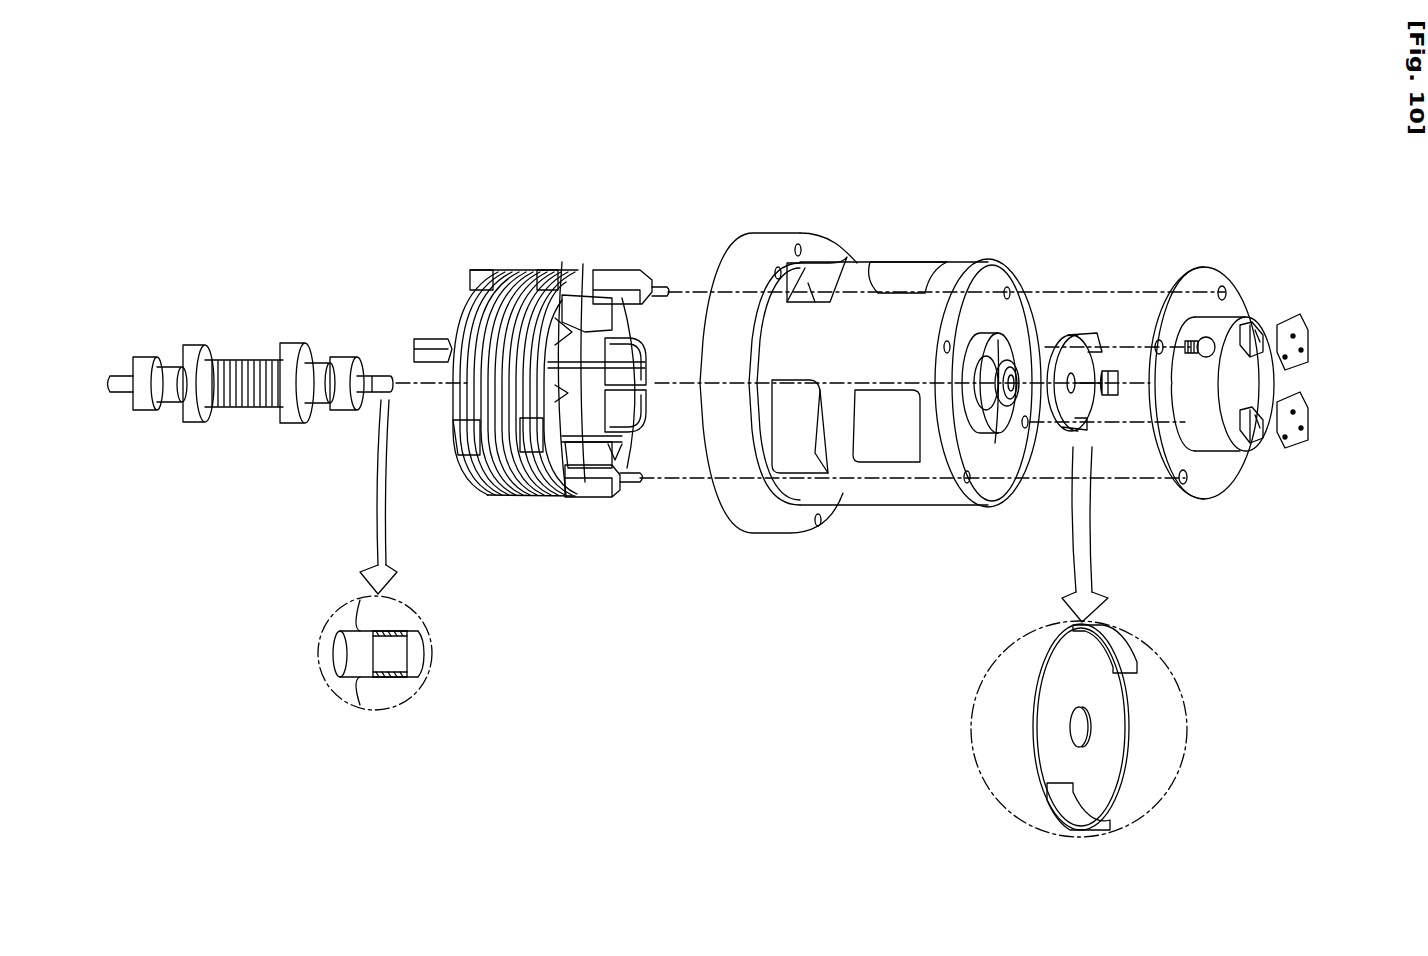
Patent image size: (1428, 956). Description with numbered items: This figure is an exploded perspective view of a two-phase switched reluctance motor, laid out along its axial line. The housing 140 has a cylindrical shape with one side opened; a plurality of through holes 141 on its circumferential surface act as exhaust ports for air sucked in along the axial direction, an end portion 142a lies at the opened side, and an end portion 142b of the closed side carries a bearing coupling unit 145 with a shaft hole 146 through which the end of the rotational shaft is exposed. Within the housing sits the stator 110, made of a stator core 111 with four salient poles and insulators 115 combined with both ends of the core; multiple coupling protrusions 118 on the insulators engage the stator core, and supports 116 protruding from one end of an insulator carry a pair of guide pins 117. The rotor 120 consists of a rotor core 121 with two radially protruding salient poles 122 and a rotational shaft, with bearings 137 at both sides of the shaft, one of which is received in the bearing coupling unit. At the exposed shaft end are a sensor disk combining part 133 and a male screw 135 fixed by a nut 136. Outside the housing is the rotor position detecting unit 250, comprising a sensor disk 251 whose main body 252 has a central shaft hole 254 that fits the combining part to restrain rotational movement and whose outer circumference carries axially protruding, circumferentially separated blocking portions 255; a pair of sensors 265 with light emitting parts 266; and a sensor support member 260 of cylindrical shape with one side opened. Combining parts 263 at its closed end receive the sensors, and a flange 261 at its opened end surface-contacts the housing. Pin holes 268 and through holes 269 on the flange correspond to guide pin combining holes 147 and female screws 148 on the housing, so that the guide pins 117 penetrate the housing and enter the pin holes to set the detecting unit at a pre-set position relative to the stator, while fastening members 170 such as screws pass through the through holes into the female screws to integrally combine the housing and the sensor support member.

The stator 110 is at (630, 160).
The stator core 111 is at (565, 270).
The insulators 115 is at (590, 300).
The supports 116 is at (622, 280).
The guide pins 117 is at (660, 288).
The coupling protrusions 118 is at (545, 266).
The rotor 120 is at (362, 262).
The rotor core 121 is at (264, 355).
The salient poles 122 is at (231, 372).
The sensor disk combining part 133 is at (401, 662).
The male screw 135 is at (381, 678).
The nut 136 is at (1110, 370).
The bearings 137 is at (145, 365).
The housing 140 is at (878, 250).
The through holes 141 is at (920, 262).
The first window 142a is at (730, 493).
The end portion of the closed side 142b is at (1012, 493).
The bearing coupling unit 145 is at (1013, 360).
The shaft hole 146 is at (1020, 368).
The guide pin combining holes 147 is at (992, 337).
The female screws 148 is at (995, 443).
The fastening members 170 is at (1203, 337).
The rotor position detecting unit 250 is at (1278, 524).
The sensor disk 251 is at (1020, 716).
The main body 252 is at (1097, 778).
The shaft hole 254 is at (1086, 735).
The blocking portions 255 is at (1127, 658).
The sensor support member 260 is at (1250, 300).
The flange 261 is at (1213, 490).
The combining parts 263 is at (1255, 323).
The sensors 265 is at (1303, 393).
The light emitting parts 266 is at (1292, 322).
The pin holes 268 is at (1225, 287).
The through holes 269 is at (1160, 338).